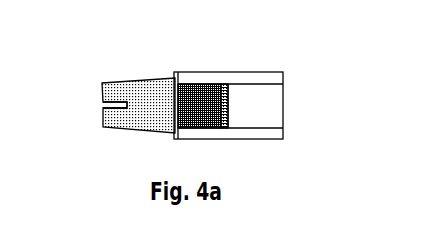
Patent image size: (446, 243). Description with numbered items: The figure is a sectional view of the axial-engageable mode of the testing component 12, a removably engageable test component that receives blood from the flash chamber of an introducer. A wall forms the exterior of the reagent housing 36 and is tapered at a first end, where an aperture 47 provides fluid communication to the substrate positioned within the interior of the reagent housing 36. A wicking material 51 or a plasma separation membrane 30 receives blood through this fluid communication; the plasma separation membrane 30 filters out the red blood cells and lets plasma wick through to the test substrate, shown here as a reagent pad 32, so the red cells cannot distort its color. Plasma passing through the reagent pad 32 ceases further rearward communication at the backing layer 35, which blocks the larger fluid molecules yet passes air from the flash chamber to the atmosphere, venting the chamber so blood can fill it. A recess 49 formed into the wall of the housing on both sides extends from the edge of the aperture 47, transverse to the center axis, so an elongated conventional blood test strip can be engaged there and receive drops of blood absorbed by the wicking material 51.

The testing component 12 is at (259, 120).
The plasma separation membrane 30 is at (178, 87).
The reagent pad 32 is at (199, 83).
The backing layer 35 is at (228, 103).
The reagent housing 36 is at (283, 72).
The aperture 47 is at (104, 101).
The recess 49 is at (112, 104).
The wicking material 51 is at (148, 85).